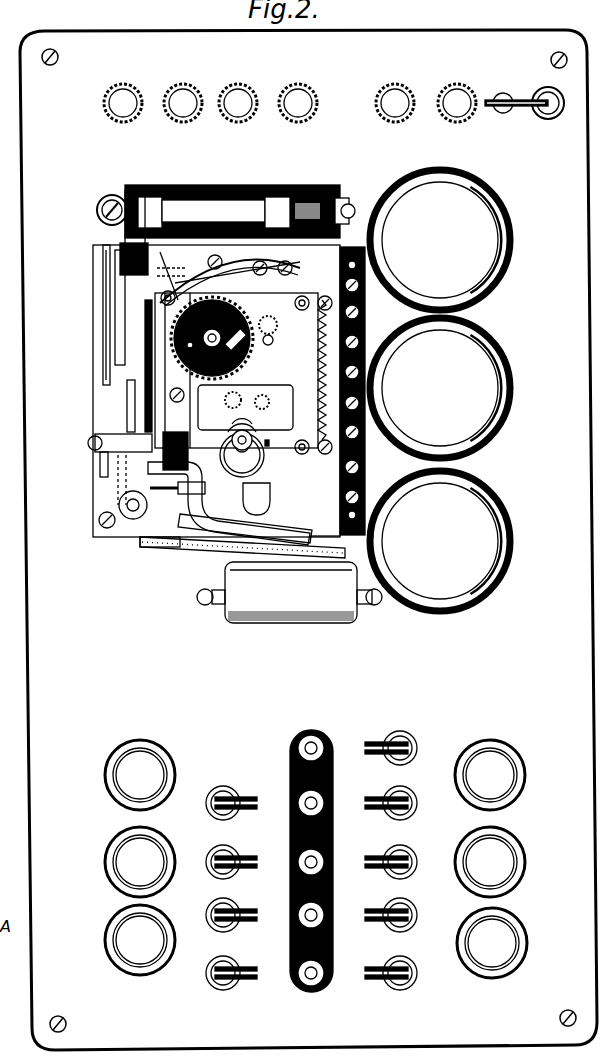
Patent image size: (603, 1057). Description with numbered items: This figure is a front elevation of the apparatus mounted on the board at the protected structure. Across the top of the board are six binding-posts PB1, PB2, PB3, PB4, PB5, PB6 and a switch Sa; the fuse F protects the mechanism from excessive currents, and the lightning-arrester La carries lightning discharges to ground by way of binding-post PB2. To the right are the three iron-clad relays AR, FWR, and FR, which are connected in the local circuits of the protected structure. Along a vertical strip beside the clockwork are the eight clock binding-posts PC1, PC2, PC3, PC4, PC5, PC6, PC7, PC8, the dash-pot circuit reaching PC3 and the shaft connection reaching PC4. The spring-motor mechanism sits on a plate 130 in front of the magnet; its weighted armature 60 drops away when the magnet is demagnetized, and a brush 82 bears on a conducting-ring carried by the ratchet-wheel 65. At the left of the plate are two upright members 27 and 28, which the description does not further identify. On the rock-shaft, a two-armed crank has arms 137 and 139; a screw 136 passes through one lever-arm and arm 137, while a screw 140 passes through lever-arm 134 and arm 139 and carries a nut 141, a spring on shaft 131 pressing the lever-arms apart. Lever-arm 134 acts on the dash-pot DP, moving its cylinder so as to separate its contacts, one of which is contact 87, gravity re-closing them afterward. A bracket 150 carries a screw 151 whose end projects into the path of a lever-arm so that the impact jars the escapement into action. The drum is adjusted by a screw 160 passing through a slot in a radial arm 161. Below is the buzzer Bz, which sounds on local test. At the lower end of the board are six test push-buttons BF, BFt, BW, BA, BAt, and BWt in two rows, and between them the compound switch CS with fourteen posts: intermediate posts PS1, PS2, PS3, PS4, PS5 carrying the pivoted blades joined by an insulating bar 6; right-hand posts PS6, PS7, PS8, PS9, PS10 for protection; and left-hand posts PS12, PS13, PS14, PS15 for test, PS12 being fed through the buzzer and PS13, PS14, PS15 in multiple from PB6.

The binding-post PB1 is at (115, 90).
The binding-post PB2 is at (183, 93).
The binding-post PB3 is at (238, 92).
The binding-post PB4 is at (298, 92).
The binding-post PB5 is at (395, 92).
The binding-post PB6 is at (457, 92).
The switch Sa is at (540, 87).
The fuse F is at (232, 208).
The lightning-arrester La is at (345, 200).
The relay AR is at (440, 240).
The relay FWR is at (440, 388).
The relay FR is at (440, 541).
The binding-post PC1 is at (362, 287).
The binding-post PC2 is at (362, 313).
The binding-post PC3 is at (362, 342).
The binding-post PC4 is at (362, 372).
The binding-post PC5 is at (362, 403).
The binding-post PC6 is at (362, 432).
The binding-post PC7 is at (362, 467).
The binding-post PC8 is at (362, 497).
The dash-pot contact 87 is at (207, 262).
The brush 82 is at (290, 268).
The bar 27 is at (113, 322).
The bar 28 is at (126, 365).
The screw 160 is at (248, 360).
The radial arm 161 is at (245, 407).
The ratchet-wheel 65 is at (324, 370).
The screw 151 is at (90, 444).
The bracket 150 is at (104, 455).
The screw 136 is at (116, 466).
The crank arm 137 is at (130, 480).
The shaft 131 is at (130, 506).
The nut 141 is at (191, 490).
The crank arm 139 is at (243, 500).
The dash-pot DP is at (262, 520).
The lever-arm 134 is at (316, 524).
The plate 130 is at (118, 530).
The screw 140 is at (166, 544).
The armature 60 is at (224, 548).
The buzzer Bz is at (289, 592).
The push-button BF is at (140, 775).
The push-button BFt is at (140, 862).
The push-button BW is at (140, 940).
The push-button BA is at (490, 775).
The push-button BAt is at (490, 862).
The push-button BWt is at (492, 943).
The compound switch CS is at (295, 861).
The bar of insulation 6 is at (326, 742).
The switch-post PS1 is at (297, 748).
The switch-post PS2 is at (298, 805).
The switch-post PS3 is at (298, 862).
The switch-post PS4 is at (298, 918).
The switch-post PS5 is at (300, 978).
The switch-post PS6 is at (415, 752).
The switch-post PS7 is at (415, 806).
The switch-post PS8 is at (416, 864).
The switch-post PS9 is at (416, 917).
The switch-post PS10 is at (416, 975).
The switch-post PS12 is at (208, 808).
The switch-post PS13 is at (208, 866).
The switch-post PS14 is at (208, 919).
The switch-post PS15 is at (208, 977).